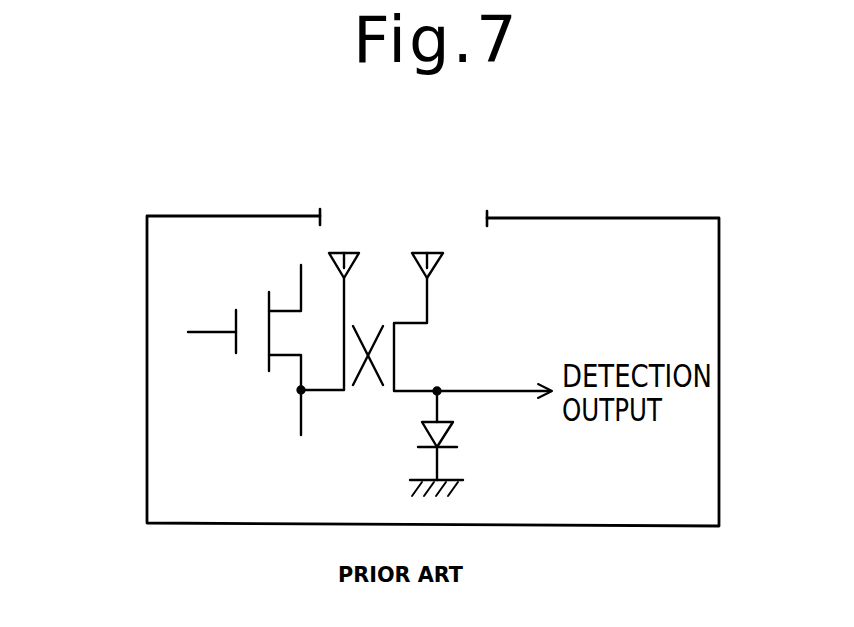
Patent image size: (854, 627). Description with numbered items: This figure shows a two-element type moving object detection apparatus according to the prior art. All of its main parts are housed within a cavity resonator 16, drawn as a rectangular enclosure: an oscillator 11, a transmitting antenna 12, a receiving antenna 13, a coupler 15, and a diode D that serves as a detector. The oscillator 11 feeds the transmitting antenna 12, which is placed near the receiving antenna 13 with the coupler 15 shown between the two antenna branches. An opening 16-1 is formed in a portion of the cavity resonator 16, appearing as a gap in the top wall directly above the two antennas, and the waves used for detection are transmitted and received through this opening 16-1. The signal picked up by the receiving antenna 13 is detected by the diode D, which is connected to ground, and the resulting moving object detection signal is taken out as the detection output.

The oscillator 11 is at (230, 317).
The transmitting antenna 12 is at (327, 262).
The receiving antenna 13 is at (443, 265).
The coupler 15 is at (373, 382).
The cavity resonator 16 is at (623, 217).
The opening 16-1 is at (427, 212).
The diode D is at (456, 435).